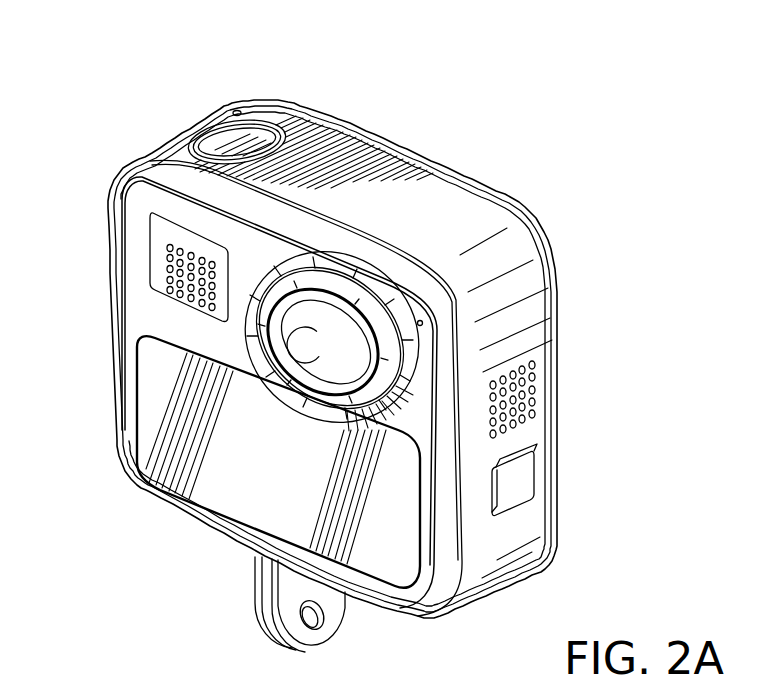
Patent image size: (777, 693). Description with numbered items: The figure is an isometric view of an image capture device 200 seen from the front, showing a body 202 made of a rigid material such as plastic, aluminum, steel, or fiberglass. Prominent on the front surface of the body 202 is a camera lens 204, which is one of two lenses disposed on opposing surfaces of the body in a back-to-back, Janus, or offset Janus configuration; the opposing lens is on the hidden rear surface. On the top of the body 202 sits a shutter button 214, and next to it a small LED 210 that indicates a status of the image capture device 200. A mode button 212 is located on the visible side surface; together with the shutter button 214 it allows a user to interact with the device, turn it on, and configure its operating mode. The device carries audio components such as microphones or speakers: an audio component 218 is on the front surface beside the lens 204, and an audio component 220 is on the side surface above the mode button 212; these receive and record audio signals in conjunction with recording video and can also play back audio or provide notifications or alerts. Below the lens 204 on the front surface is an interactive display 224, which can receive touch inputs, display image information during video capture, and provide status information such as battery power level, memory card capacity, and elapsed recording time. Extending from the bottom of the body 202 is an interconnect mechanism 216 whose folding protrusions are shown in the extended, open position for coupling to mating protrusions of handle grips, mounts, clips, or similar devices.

The image capture device 200 is at (607, 167).
The body 202 is at (108, 332).
The camera lens 204 is at (290, 362).
The LED 210 is at (238, 110).
The mode button 212 is at (525, 473).
The shutter button 214 is at (250, 140).
The interconnect mechanism 216 is at (287, 592).
The audio component 218 is at (172, 272).
The audio component 220 is at (533, 387).
The interactive display 224 is at (407, 563).